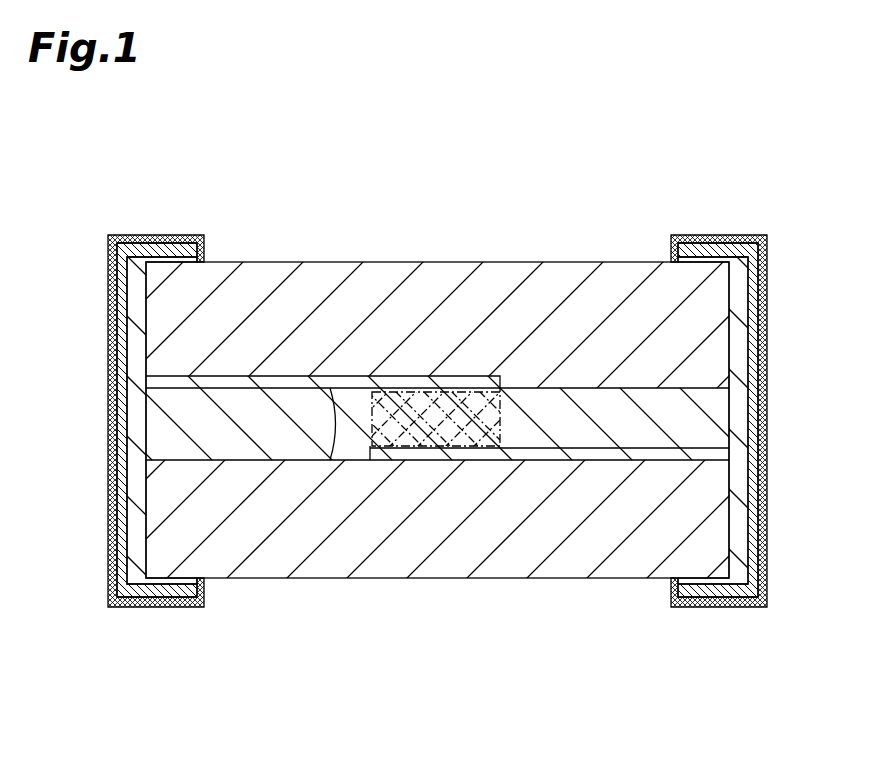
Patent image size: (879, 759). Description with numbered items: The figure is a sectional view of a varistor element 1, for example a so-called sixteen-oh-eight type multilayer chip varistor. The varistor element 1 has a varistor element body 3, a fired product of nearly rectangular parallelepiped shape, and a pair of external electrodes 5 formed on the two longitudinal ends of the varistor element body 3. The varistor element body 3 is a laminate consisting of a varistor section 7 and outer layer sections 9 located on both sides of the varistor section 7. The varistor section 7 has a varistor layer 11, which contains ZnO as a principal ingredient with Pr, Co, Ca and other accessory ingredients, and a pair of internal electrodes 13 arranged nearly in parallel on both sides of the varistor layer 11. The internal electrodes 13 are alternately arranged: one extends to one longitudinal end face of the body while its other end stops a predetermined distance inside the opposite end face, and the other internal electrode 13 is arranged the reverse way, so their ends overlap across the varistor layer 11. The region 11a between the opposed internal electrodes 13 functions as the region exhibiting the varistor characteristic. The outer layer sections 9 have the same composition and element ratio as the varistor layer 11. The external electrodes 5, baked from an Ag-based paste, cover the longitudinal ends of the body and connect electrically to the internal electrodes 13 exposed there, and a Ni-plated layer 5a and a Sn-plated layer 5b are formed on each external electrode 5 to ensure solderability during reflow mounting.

The varistor element 1 is at (688, 147).
The varistor element body 3 is at (388, 258).
The external electrode 5 is at (137, 353).
The Ni-plated layer 5a is at (120, 427).
The Sn-plated layer 5b is at (112, 492).
The varistor section 7 is at (582, 680).
The outer layer section 9 is at (297, 303).
The varistor layer 11 is at (560, 423).
The region between the internal electrodes 11a is at (516, 388).
The internal electrode 13 is at (345, 388).